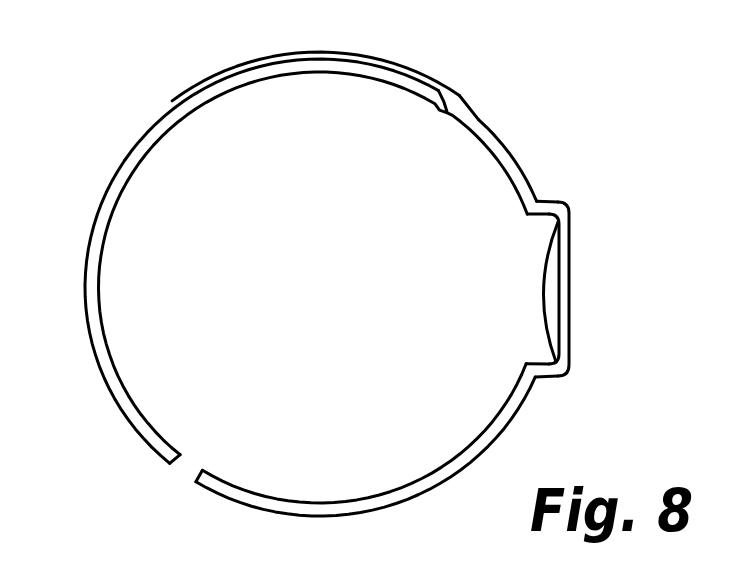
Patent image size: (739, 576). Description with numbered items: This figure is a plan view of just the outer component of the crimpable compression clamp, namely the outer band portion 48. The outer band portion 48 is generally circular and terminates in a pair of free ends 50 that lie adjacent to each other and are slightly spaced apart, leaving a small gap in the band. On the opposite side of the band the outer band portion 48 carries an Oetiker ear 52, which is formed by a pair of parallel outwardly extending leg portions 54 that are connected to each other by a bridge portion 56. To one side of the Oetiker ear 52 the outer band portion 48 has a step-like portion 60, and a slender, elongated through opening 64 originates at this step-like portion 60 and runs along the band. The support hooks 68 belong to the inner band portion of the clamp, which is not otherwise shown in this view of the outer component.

The outer band portion 48 is at (86, 231).
The pair of free ends of outer band portion 50 is at (194, 452).
The Oetiker ear 52 is at (580, 292).
The pair of parallel outwardly extending leg portions 54 is at (560, 201).
The bridge portion 56 is at (570, 252).
The step-like portion 60 is at (464, 90).
The through opening 64 is at (296, 50).
The two pair of support hooks of inner band portion 68 is at (293, 0).